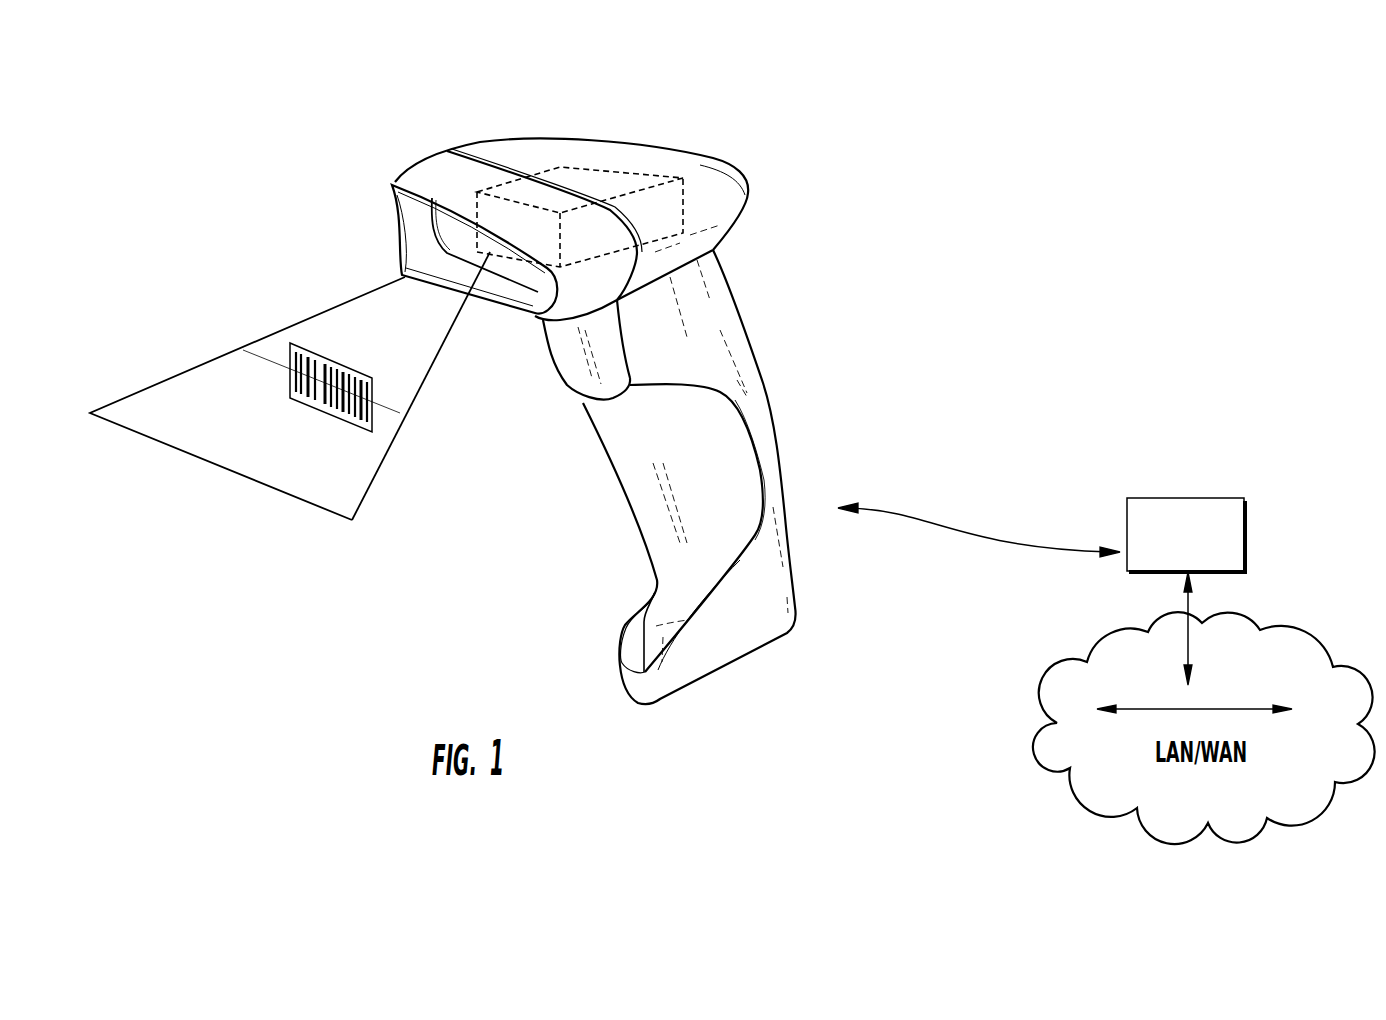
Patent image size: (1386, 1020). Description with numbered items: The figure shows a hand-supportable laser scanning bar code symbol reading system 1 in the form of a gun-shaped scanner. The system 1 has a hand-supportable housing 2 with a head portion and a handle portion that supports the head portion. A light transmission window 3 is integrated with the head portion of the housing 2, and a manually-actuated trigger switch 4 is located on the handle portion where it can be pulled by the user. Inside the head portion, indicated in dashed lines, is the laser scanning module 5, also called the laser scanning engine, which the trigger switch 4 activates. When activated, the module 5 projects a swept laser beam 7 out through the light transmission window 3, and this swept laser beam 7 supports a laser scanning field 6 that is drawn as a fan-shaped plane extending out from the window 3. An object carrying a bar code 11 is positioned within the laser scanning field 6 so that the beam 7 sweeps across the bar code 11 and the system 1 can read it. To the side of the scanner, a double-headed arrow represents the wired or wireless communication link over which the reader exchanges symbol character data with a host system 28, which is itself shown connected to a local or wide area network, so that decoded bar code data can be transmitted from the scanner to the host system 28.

The laser scanning bar code symbol reading system 1 is at (754, 141).
The hand-supportable housing 2 is at (752, 368).
The light transmission window 3 is at (452, 235).
The manually-actuated trigger switch 4 is at (567, 370).
The laser scanning module 5 is at (594, 166).
The laser scanning field 6 is at (217, 468).
The swept laser beam 7 is at (320, 513).
The bar code 11 is at (380, 417).
The host system 28 is at (1168, 498).